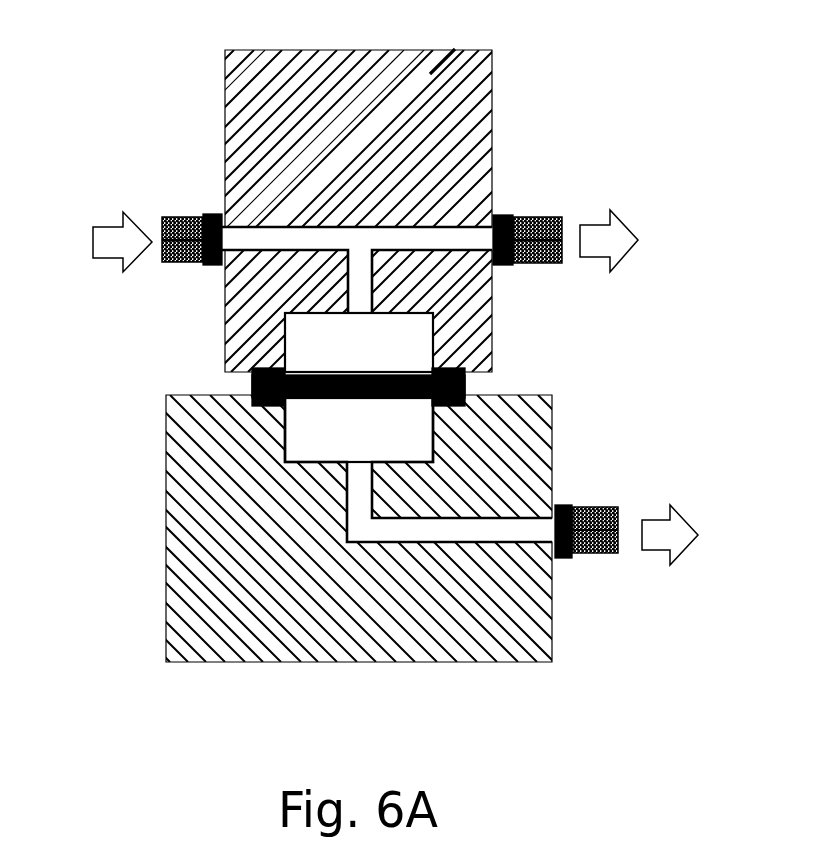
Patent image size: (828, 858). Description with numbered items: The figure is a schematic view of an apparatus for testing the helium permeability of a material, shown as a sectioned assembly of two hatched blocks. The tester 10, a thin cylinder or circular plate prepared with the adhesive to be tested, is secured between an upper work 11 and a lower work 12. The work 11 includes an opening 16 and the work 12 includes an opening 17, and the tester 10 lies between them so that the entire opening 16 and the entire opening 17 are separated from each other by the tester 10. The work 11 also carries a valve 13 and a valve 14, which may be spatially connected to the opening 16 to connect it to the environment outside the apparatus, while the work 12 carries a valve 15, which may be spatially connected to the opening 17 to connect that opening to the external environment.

The tester 10 is at (252, 382).
The work 11 is at (258, 148).
The work 12 is at (205, 593).
The valve 13 is at (176, 228).
The valve 14 is at (553, 228).
The valve 15 is at (600, 508).
The opening 16 is at (322, 347).
The opening 17 is at (320, 439).